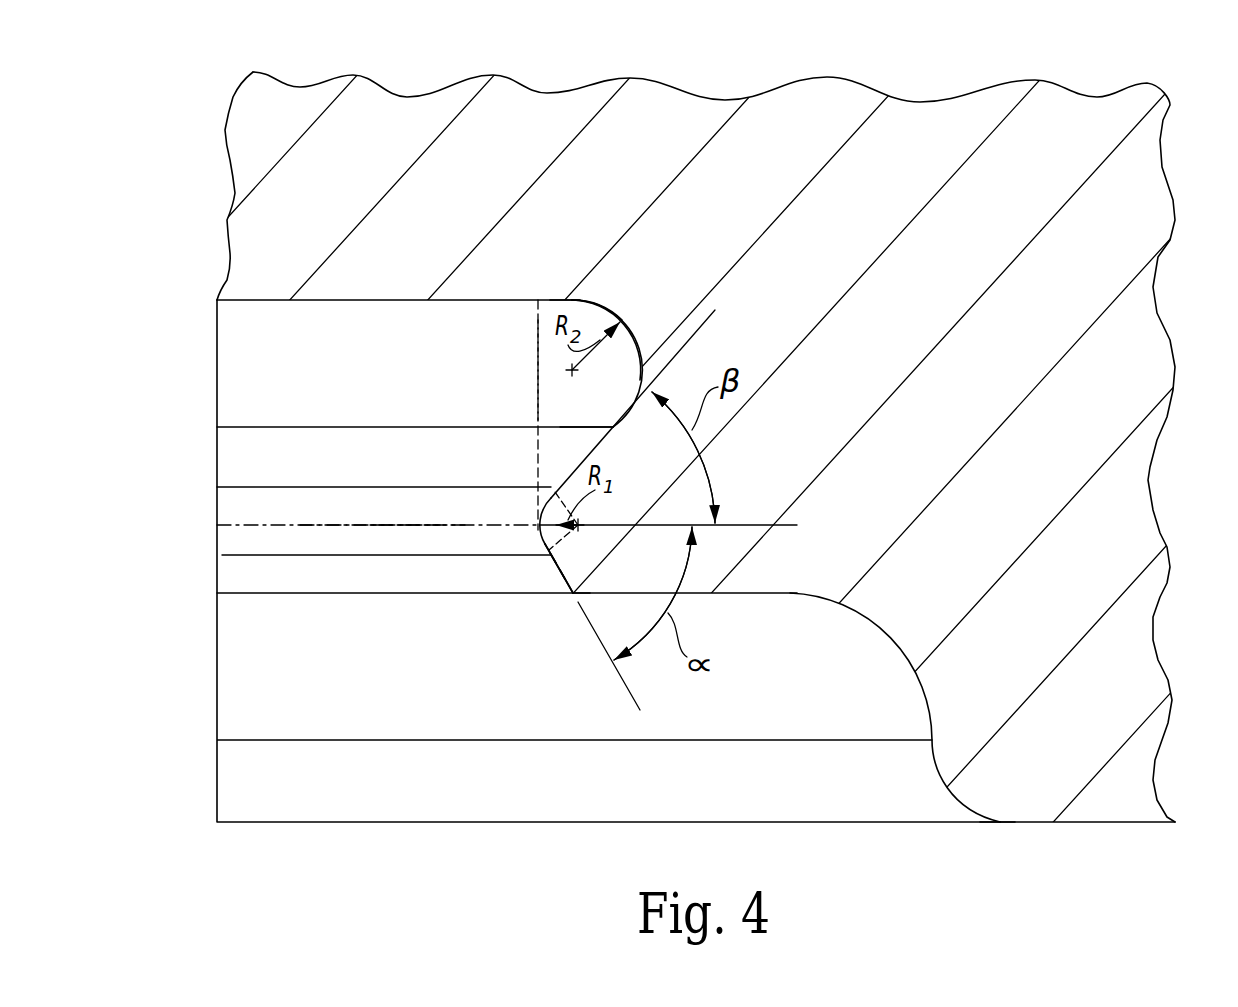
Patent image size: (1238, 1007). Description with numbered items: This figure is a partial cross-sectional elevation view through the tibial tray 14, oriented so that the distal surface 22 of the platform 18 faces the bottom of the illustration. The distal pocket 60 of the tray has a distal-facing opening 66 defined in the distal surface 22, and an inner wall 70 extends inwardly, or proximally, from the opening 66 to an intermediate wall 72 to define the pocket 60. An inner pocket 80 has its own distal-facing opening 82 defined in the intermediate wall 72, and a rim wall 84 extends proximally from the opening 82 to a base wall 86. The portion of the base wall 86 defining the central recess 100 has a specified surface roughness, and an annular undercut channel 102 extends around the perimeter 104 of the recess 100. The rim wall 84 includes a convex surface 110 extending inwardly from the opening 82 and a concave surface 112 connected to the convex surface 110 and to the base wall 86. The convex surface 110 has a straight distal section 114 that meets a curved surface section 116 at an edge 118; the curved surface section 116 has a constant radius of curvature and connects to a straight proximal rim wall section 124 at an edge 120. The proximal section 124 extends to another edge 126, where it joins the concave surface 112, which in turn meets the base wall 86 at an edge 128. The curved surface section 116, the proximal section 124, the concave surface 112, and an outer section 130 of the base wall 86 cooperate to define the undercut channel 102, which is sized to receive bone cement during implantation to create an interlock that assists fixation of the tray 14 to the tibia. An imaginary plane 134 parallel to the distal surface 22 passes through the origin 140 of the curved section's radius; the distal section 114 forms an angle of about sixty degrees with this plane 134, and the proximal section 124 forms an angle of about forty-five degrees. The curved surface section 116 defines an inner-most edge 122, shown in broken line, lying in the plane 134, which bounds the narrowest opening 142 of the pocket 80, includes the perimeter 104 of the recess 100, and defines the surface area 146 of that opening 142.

The tibial tray 14 is at (140, 124).
The platform 18 is at (870, 86).
The distal surface 22 is at (1125, 824).
The distal pocket 60 is at (505, 781).
The distal-facing opening 66 is at (995, 824).
The inner wall 70 is at (928, 727).
The intermediate wall 72 is at (748, 597).
The inner pocket 80 is at (251, 560).
The distal-facing opening 82 is at (574, 597).
The rim wall 84 is at (636, 358).
The base wall 86 is at (400, 297).
The central recess 100 is at (262, 330).
The undercut channel 102 is at (624, 309).
The perimeter 104 is at (538, 318).
The convex surface 110 is at (515, 567).
The concave surface 112 is at (543, 348).
The distal section 114 is at (555, 578).
The curved surface section 116 is at (547, 527).
The edge 118 is at (543, 560).
The edge 120 is at (492, 486).
The inner-most edge 122 is at (440, 522).
The proximal rim wall section 124 is at (592, 432).
The edge 126 is at (612, 424).
The edge 128 is at (577, 296).
The outer section 130 is at (563, 300).
The imaginary plane 134 is at (753, 524).
The origin 140 is at (581, 525).
The narrowest opening 142 is at (367, 527).
The surface area 146 is at (406, 534).